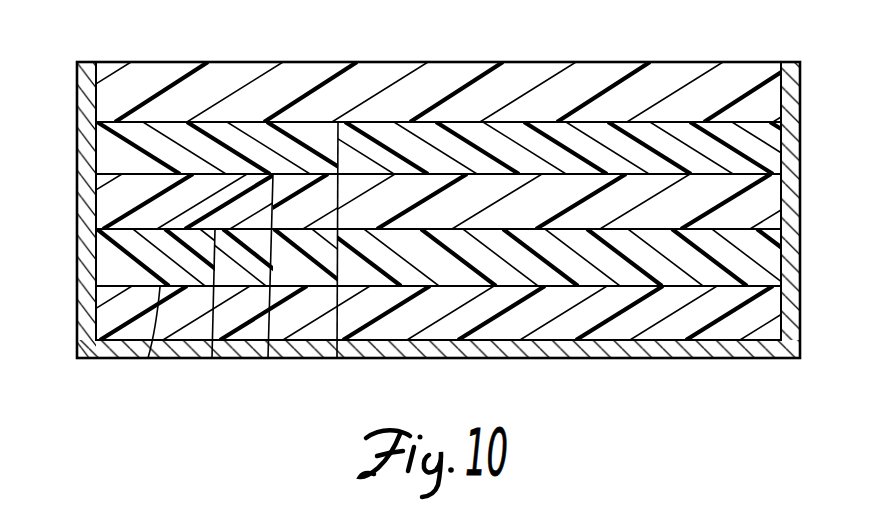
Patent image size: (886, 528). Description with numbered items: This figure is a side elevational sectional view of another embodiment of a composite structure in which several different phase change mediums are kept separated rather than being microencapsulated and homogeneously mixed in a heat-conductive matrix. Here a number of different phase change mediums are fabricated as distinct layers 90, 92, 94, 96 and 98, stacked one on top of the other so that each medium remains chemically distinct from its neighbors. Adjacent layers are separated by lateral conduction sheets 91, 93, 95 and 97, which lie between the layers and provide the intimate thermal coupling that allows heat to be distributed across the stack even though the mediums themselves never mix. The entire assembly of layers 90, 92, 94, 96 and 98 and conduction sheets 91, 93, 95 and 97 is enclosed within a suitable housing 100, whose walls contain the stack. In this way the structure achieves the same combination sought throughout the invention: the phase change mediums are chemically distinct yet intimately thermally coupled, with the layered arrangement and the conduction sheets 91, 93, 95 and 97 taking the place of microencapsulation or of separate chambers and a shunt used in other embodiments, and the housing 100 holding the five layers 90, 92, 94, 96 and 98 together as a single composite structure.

The housing 100 is at (786, 197).
The layer 98 is at (107, 98).
The layer 96 is at (107, 151).
The layer 94 is at (107, 203).
The layer 92 is at (107, 255).
The layer 90 is at (107, 308).
The lateral conduction sheet 91 is at (148, 358).
The lateral conduction sheet 93 is at (212, 358).
The lateral conduction sheet 95 is at (268, 358).
The lateral conduction sheet 97 is at (337, 358).